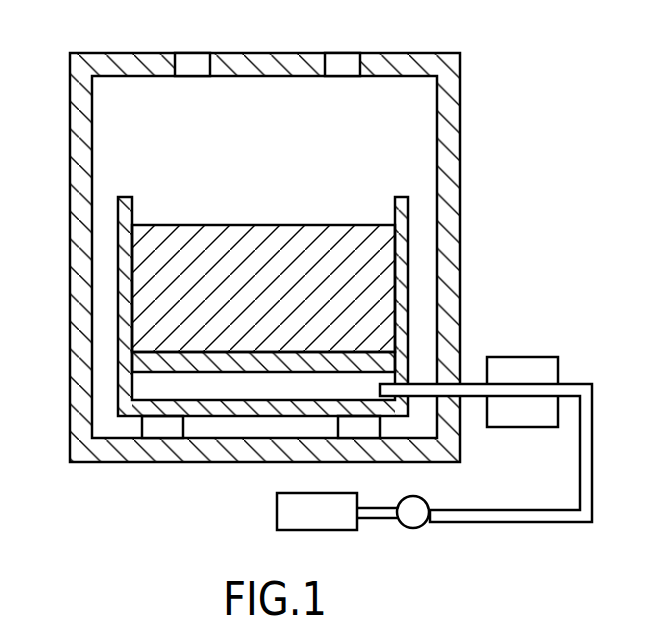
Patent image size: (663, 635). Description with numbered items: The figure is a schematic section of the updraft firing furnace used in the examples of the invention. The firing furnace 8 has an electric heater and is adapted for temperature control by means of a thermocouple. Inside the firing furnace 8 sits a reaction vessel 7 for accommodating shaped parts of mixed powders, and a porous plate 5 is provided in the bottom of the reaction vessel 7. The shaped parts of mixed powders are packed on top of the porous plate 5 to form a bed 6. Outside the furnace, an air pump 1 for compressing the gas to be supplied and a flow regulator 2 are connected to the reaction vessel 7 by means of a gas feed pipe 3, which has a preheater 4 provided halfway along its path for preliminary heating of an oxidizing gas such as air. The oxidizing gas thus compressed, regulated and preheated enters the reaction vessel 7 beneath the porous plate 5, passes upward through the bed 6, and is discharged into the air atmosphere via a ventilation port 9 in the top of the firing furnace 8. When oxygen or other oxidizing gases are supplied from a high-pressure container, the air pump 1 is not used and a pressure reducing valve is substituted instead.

The air pump 1 is at (300, 531).
The flow regulator 2 is at (420, 527).
The gas feed pipe 3 is at (530, 522).
The preheater 4 is at (517, 357).
The porous plate 5 is at (143, 372).
The bed 6 is at (268, 228).
The reaction vessel 7 is at (118, 272).
The firing furnace 8 is at (461, 130).
The ventilation port 9 is at (347, 57).